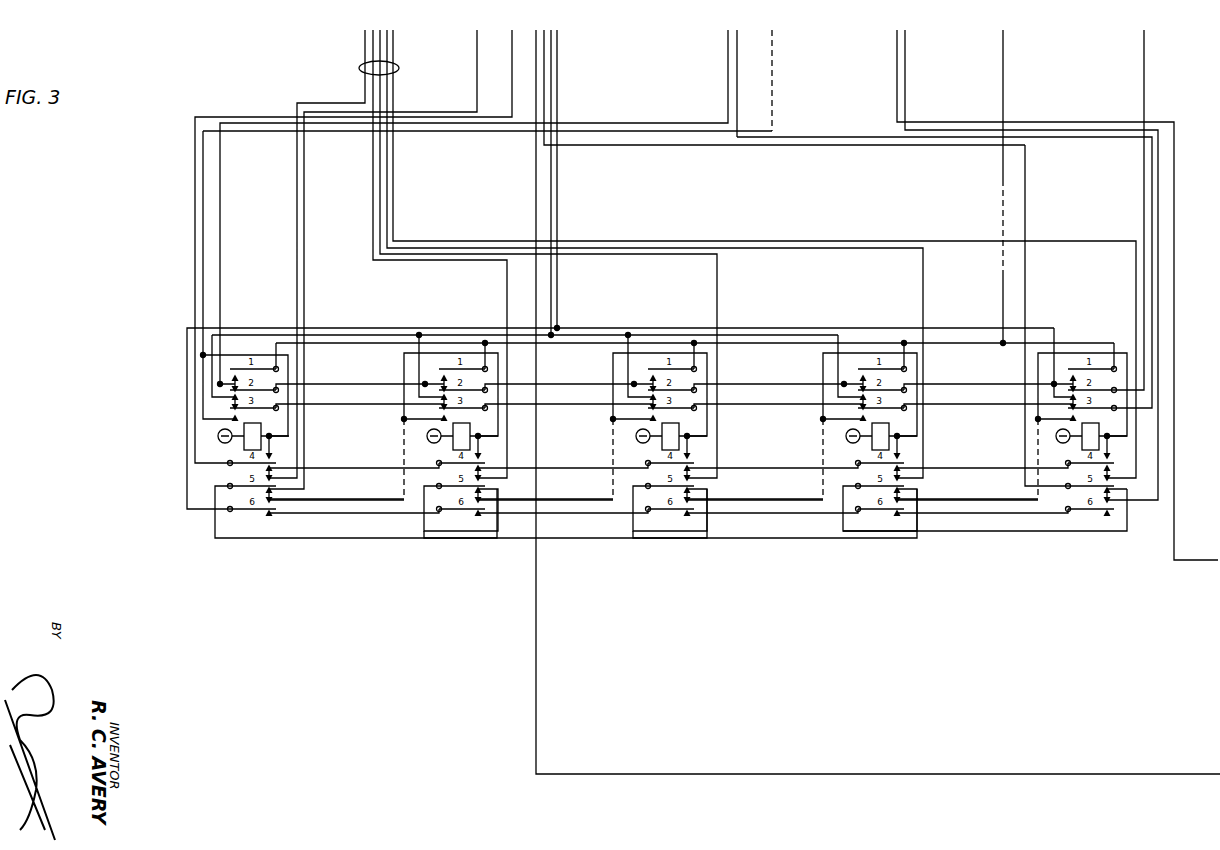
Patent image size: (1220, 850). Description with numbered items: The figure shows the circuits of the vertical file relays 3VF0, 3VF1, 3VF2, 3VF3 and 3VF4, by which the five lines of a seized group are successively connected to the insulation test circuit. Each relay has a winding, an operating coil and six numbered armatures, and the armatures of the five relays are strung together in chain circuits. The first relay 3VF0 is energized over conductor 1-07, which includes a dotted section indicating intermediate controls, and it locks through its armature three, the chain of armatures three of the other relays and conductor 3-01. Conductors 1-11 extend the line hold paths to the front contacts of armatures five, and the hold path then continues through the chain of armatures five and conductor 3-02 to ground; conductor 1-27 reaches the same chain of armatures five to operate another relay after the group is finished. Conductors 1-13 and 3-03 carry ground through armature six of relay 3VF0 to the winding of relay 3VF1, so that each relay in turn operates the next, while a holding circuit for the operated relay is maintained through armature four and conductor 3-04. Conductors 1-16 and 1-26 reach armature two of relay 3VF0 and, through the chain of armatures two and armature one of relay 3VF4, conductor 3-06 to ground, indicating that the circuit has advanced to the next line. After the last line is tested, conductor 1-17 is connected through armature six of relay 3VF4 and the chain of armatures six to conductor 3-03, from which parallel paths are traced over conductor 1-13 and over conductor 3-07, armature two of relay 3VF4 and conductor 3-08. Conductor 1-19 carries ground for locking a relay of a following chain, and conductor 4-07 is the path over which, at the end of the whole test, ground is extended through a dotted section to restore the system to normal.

The conductors 1-11 is at (359, 68).
The conductor 1-27 is at (477, 68).
The conductor 1-26 is at (728, 68).
The conductor 1-07 is at (772, 120).
The conductor 1-19 is at (897, 68).
The conductor 1-17 is at (905, 68).
The conductor 3-08 is at (1144, 68).
The conductor 3-06 is at (1003, 98).
The conductor 3-01 is at (1077, 137).
The conductor 3-02 is at (1025, 192).
The conductor 1-16 is at (544, 195).
The conductor 1-13 is at (557, 195).
The conductor 3-04 is at (195, 192).
The conductor 3-03 is at (371, 328).
The conductor 3-07 is at (851, 328).
The conductor 4-07 is at (737, 774).
The vertical file relay 3VF0 is at (262, 430).
The vertical file relay 3VF1 is at (471, 430).
The vertical file relay 3VF2 is at (680, 428).
The vertical file relay 3VF3 is at (890, 428).
The vertical file relay 3VF4 is at (1081, 445).